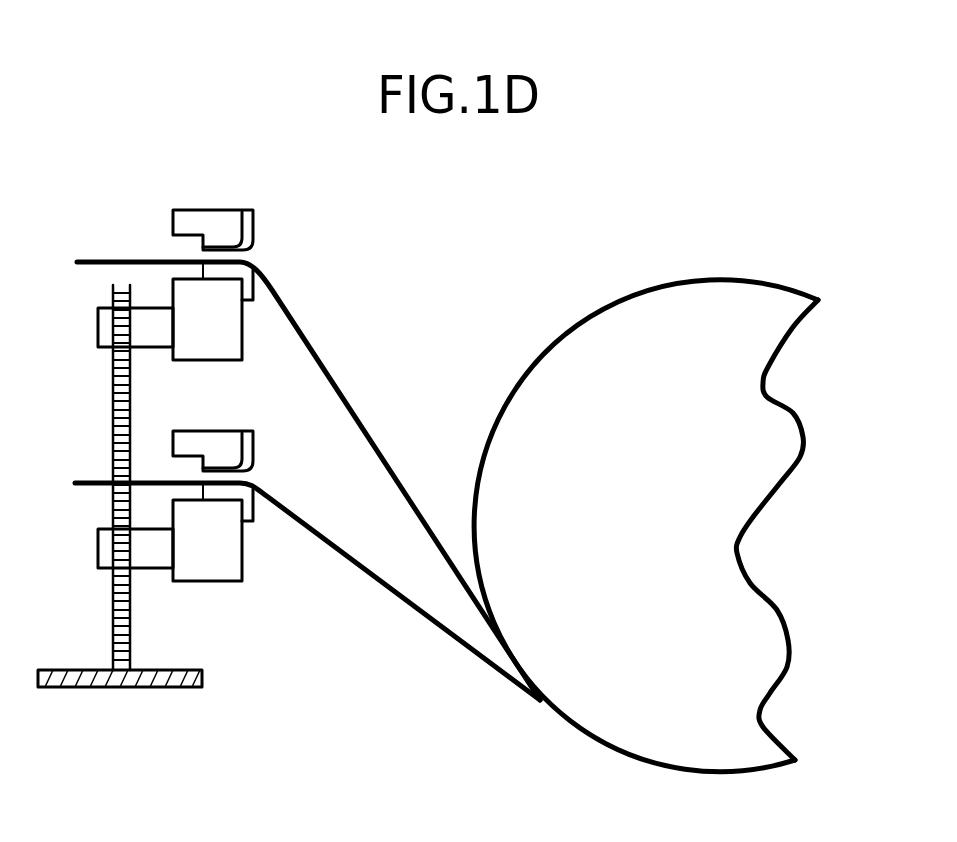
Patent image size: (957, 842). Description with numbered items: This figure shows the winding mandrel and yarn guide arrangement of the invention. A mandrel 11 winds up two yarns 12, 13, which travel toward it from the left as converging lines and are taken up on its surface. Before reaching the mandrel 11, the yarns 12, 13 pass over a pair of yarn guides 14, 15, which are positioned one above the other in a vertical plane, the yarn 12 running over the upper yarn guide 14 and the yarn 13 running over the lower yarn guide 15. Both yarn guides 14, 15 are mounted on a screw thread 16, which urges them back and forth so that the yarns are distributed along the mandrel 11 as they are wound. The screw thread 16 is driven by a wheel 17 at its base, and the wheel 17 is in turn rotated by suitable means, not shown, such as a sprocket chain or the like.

The mandrel 11 is at (642, 293).
The yarn 12 is at (325, 370).
The yarn 13 is at (350, 558).
The yarn guide 14 is at (210, 330).
The yarn guide 15 is at (213, 567).
The screw thread 16 is at (113, 393).
The wheel 17 is at (120, 687).